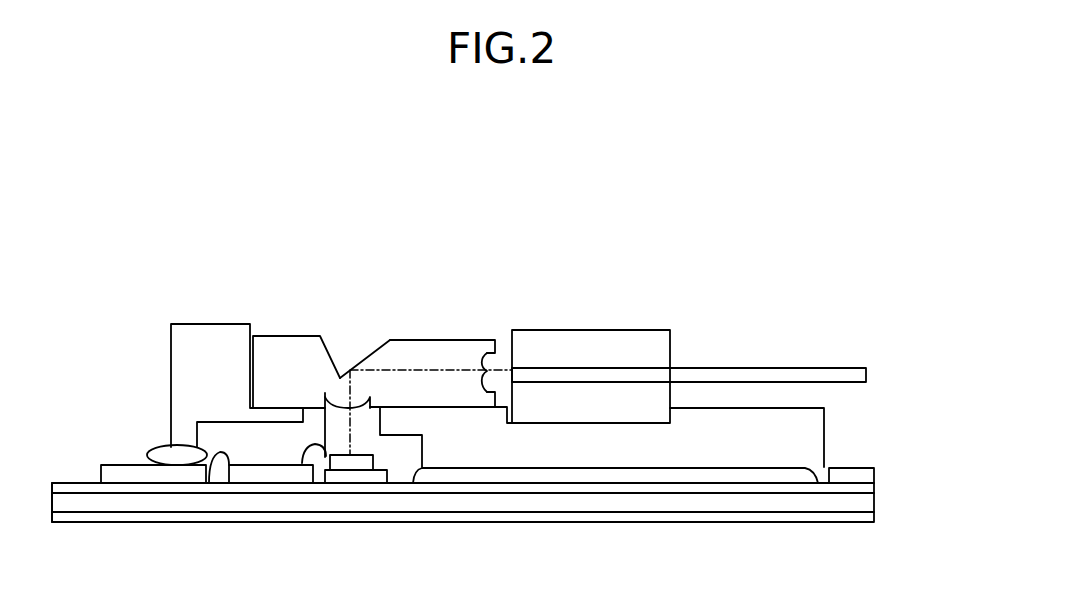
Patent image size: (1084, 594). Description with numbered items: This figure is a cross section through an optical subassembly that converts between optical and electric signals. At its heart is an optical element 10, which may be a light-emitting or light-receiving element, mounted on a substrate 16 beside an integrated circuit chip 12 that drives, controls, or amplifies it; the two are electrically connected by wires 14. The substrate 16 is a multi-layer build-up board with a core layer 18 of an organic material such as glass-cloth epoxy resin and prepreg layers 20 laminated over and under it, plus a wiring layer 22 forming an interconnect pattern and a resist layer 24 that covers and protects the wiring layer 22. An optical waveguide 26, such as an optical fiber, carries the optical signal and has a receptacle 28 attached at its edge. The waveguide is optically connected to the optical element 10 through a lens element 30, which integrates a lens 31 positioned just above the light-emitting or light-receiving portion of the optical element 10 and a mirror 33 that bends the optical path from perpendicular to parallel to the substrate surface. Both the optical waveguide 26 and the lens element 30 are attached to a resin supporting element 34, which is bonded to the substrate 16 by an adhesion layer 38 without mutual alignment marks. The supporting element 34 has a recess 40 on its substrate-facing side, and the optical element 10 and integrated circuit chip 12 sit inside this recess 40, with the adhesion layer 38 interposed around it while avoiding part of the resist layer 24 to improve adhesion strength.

The optical element 10 is at (360, 462).
The integrated circuit chip 12 is at (260, 475).
The wires 14 is at (222, 452).
The substrate 16 is at (792, 525).
The core layer 18 is at (875, 505).
The prepreg layers 20 is at (875, 487).
The wiring layer 22 is at (73, 480).
The resist layer 24 is at (118, 476).
The optical waveguide 26 is at (794, 368).
The receptacle 28 is at (623, 330).
The lens element 30 is at (434, 340).
The lens 31 is at (502, 358).
The mirror 33 is at (362, 355).
The supporting element 34 is at (717, 458).
The adhesion layer 38 is at (175, 458).
The recess 40 is at (252, 446).